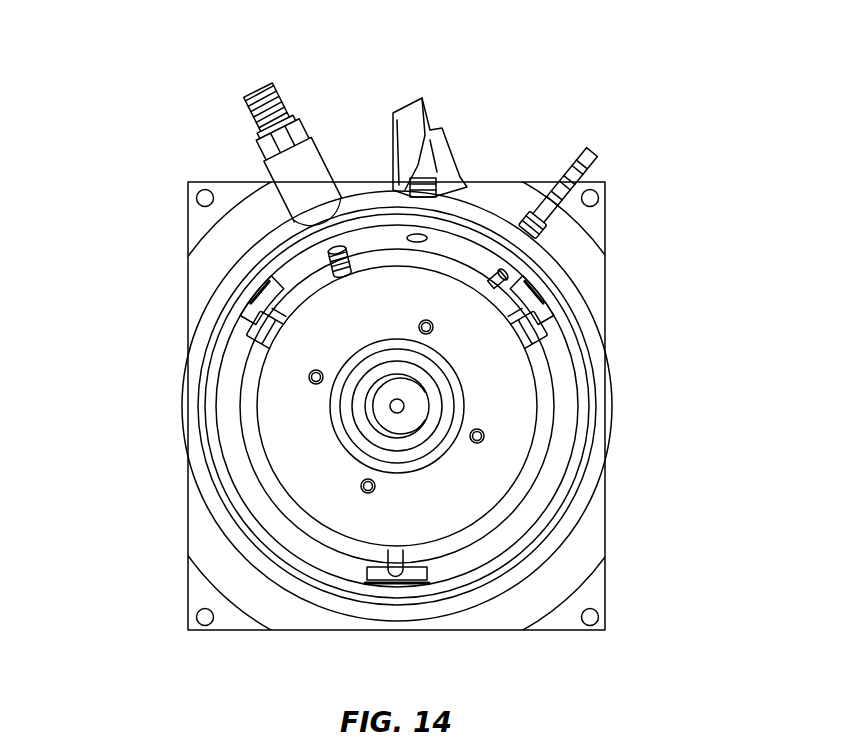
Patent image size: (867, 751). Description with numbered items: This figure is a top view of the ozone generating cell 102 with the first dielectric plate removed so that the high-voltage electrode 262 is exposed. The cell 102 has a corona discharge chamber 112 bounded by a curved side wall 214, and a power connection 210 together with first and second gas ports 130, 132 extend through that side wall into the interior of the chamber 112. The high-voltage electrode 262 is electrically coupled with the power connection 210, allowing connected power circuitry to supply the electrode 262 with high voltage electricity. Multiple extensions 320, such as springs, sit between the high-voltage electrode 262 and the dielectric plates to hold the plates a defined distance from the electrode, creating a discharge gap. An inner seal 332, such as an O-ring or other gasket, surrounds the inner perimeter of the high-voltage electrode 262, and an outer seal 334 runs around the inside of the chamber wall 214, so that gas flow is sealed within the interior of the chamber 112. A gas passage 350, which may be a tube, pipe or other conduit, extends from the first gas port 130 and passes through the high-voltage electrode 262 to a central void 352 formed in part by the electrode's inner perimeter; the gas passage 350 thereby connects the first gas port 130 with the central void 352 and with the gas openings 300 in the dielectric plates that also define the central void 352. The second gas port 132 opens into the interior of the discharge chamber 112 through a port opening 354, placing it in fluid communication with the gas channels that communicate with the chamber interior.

The ozone generating cell 102 is at (186, 123).
The corona discharge chamber 112 is at (520, 583).
The first gas port 130 is at (305, 160).
The second gas port 132 is at (427, 190).
The power connection 210 is at (597, 152).
The curved side wall 214 is at (235, 550).
The high-voltage electrode 262 is at (540, 382).
The gas openings 300 is at (390, 412).
The extensions 320 is at (308, 377).
The inner seal 332 is at (418, 440).
The outer seal 334 is at (587, 452).
The gas passage 350 is at (330, 262).
The central void 352 is at (383, 402).
The port opening 354 is at (410, 233).